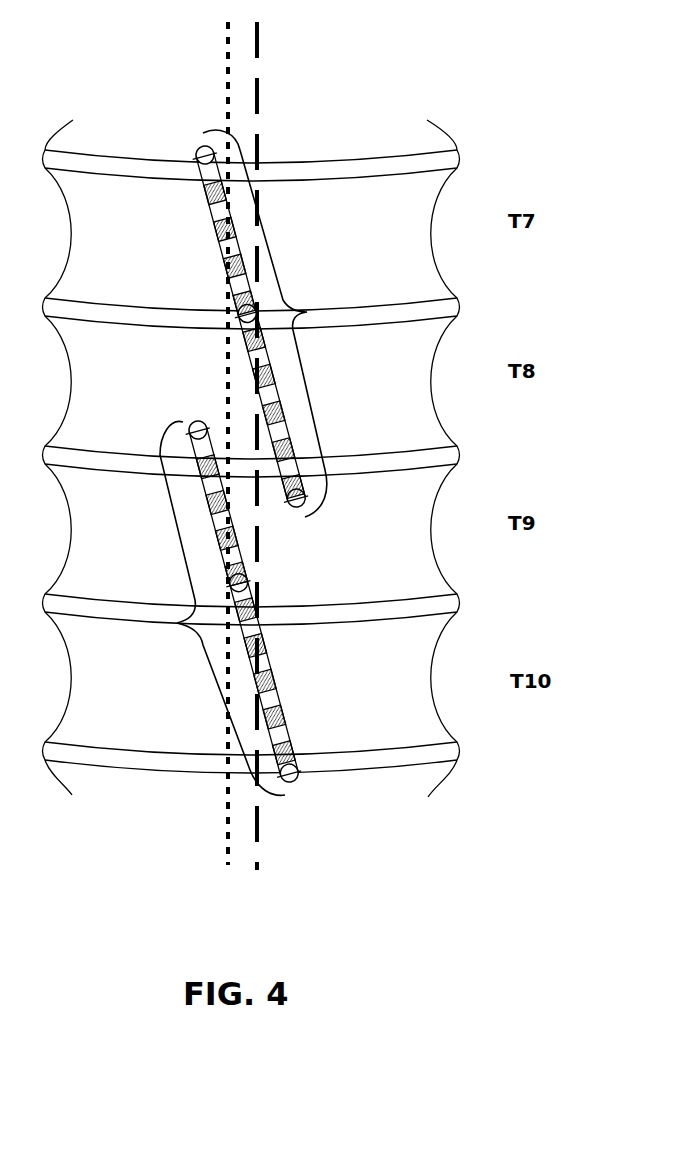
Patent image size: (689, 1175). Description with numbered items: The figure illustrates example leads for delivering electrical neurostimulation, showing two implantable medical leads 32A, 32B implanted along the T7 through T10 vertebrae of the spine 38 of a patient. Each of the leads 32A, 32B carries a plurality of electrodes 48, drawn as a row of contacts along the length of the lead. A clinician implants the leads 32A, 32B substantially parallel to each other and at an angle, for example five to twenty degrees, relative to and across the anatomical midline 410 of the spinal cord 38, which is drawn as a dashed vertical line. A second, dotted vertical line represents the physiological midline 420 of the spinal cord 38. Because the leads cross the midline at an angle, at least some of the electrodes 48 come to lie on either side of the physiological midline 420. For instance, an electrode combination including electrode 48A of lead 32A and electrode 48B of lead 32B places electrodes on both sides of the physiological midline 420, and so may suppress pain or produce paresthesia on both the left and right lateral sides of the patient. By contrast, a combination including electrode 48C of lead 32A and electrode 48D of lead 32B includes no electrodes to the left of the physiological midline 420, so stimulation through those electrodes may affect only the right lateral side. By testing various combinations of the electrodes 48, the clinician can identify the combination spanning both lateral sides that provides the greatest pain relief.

The spine 38 is at (456, 148).
The physiological midline 420 is at (228, 67).
The anatomical midline 410 is at (257, 45).
The implantable medical lead 32A is at (212, 606).
The implantable medical lead 32B is at (275, 323).
The electrodes 48 is at (255, 282).
The electrode 48A is at (195, 468).
The electrode 48B is at (225, 186).
The electrode 48C is at (298, 758).
The electrode 48D is at (300, 473).